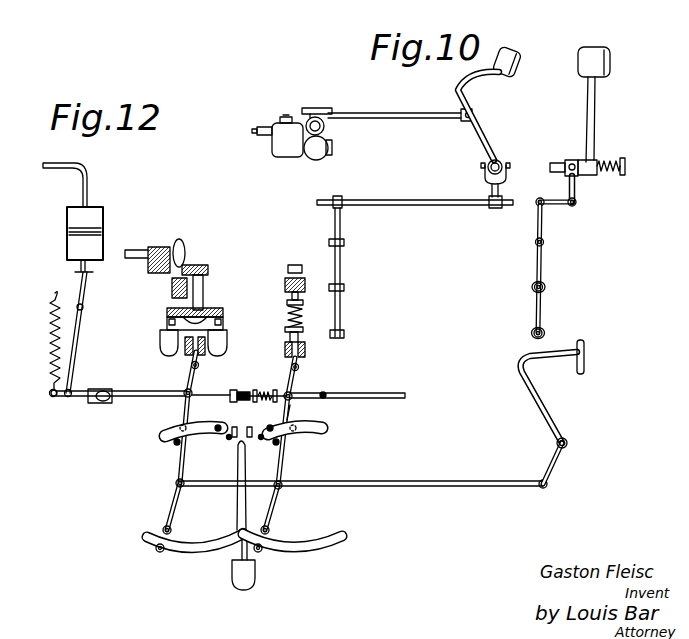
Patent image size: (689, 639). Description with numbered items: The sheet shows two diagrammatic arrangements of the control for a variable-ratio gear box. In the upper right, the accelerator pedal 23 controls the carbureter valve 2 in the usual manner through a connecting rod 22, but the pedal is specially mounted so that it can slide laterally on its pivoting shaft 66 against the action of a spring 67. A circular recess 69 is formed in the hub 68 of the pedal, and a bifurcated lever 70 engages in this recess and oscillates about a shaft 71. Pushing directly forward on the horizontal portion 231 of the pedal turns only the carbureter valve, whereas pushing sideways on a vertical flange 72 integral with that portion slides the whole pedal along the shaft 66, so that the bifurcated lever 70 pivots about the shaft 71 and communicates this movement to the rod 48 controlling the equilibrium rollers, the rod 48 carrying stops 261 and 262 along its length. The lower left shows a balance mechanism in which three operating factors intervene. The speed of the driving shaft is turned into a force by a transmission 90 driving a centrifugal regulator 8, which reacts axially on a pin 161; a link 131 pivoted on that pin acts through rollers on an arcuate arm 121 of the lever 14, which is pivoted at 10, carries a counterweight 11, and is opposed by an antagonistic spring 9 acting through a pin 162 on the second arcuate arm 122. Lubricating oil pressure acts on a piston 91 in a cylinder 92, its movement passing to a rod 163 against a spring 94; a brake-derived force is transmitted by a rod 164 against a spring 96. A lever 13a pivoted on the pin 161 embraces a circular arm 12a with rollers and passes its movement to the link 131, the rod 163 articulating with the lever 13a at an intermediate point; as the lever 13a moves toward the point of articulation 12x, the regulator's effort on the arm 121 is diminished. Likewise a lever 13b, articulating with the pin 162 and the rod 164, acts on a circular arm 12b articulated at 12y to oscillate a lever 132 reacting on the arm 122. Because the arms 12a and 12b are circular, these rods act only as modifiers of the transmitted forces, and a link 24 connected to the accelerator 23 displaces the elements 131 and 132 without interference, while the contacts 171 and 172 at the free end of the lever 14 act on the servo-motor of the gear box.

In FIG. 10, the carbureter valve 2 is at (292, 147).
In FIG. 12, the centrifugal regulator 8 is at (203, 310).
In FIG. 12, the antagonistic spring 9 is at (278, 311).
In FIG. 12, the pivot 10 is at (222, 528).
In FIG. 12, the counterweight 11 is at (228, 566).
In FIG. 12, the arcuate arm 121 is at (195, 556).
In FIG. 12, the arcuate arm 122 is at (292, 555).
In FIG. 12, the circular arm 12a is at (193, 424).
In FIG. 12, the circular arm 12b is at (324, 432).
In FIG. 12, the point of articulation 12x is at (238, 419).
In FIG. 12, the articulation 12y is at (314, 414).
In FIG. 12, the link 131 is at (161, 443).
In FIG. 12, the lever 132 is at (296, 446).
In FIG. 12, the lever 13a is at (207, 386).
In FIG. 12, the lever 13b is at (306, 388).
In FIG. 12, the lever 14 is at (221, 485).
In FIG. 12, the pin 161 is at (219, 368).
In FIG. 12, the pin 162 is at (318, 368).
In FIG. 12, the rod 163 is at (119, 383).
In FIG. 12, the rod 164 is at (348, 380).
In FIG. 12, the contact 171 is at (213, 456).
In FIG. 12, the contact 172 is at (293, 454).
In FIG. 10, the rod 22 is at (400, 106).
In FIG. 10, the pedal 23 is at (550, 281).
In FIG. 10, the horizontal portion of the pedal 231 is at (549, 94).
In FIG. 10, the link 24 is at (372, 463).
In FIG. 10, the stop 261 is at (465, 266).
In FIG. 10, the stop 262 is at (437, 311).
In FIG. 10, the rod 48 is at (455, 267).
In FIG. 10, the pivoting shaft 66 is at (473, 172).
In FIG. 10, the spring 67 is at (611, 150).
In FIG. 10, the hub 68 is at (535, 136).
In FIG. 10, the circular recess 69 is at (569, 153).
In FIG. 10, the bifurcated lever 70 is at (534, 192).
In FIG. 10, the shaft 71 is at (465, 202).
In FIG. 10, the vertical flange 72 is at (523, 61).
In FIG. 12, the transmission 90 is at (158, 242).
In FIG. 12, the piston 91 is at (109, 300).
In FIG. 12, the cylinder 92 is at (94, 191).
In FIG. 12, the spring 94 is at (37, 344).
In FIG. 12, the spring 96 is at (258, 383).